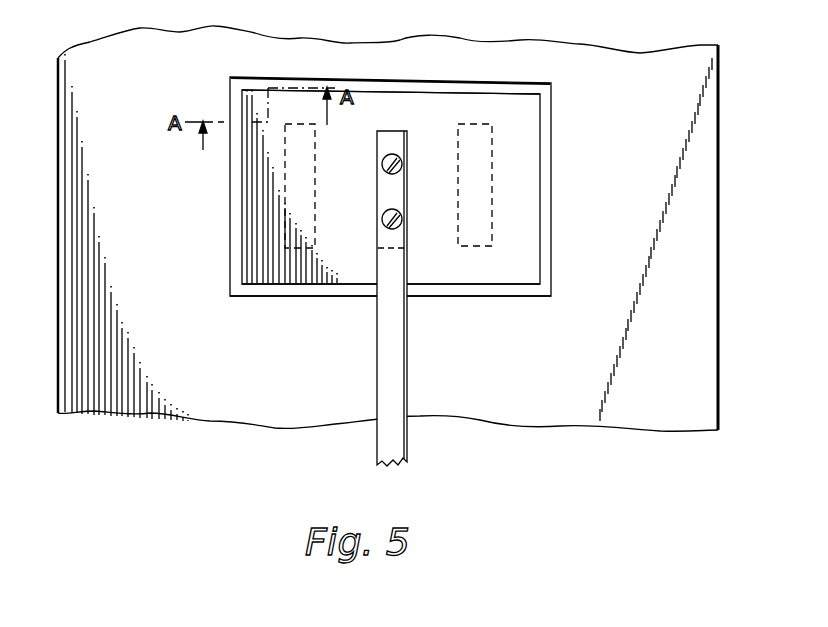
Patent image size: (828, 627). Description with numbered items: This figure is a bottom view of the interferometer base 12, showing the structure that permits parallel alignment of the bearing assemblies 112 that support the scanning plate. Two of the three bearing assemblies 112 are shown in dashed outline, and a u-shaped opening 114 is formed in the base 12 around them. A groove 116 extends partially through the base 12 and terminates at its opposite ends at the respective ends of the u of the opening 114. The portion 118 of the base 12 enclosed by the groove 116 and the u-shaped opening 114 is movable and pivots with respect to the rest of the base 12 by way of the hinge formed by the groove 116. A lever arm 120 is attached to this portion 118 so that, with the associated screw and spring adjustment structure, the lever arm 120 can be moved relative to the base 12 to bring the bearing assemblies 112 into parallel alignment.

The base 12 is at (722, 99).
The bearing assemblies 112 is at (287, 180).
The u-shaped opening 114 is at (551, 204).
The groove 116 is at (423, 85).
The portion 118 is at (443, 270).
The lever arm 120 is at (412, 298).